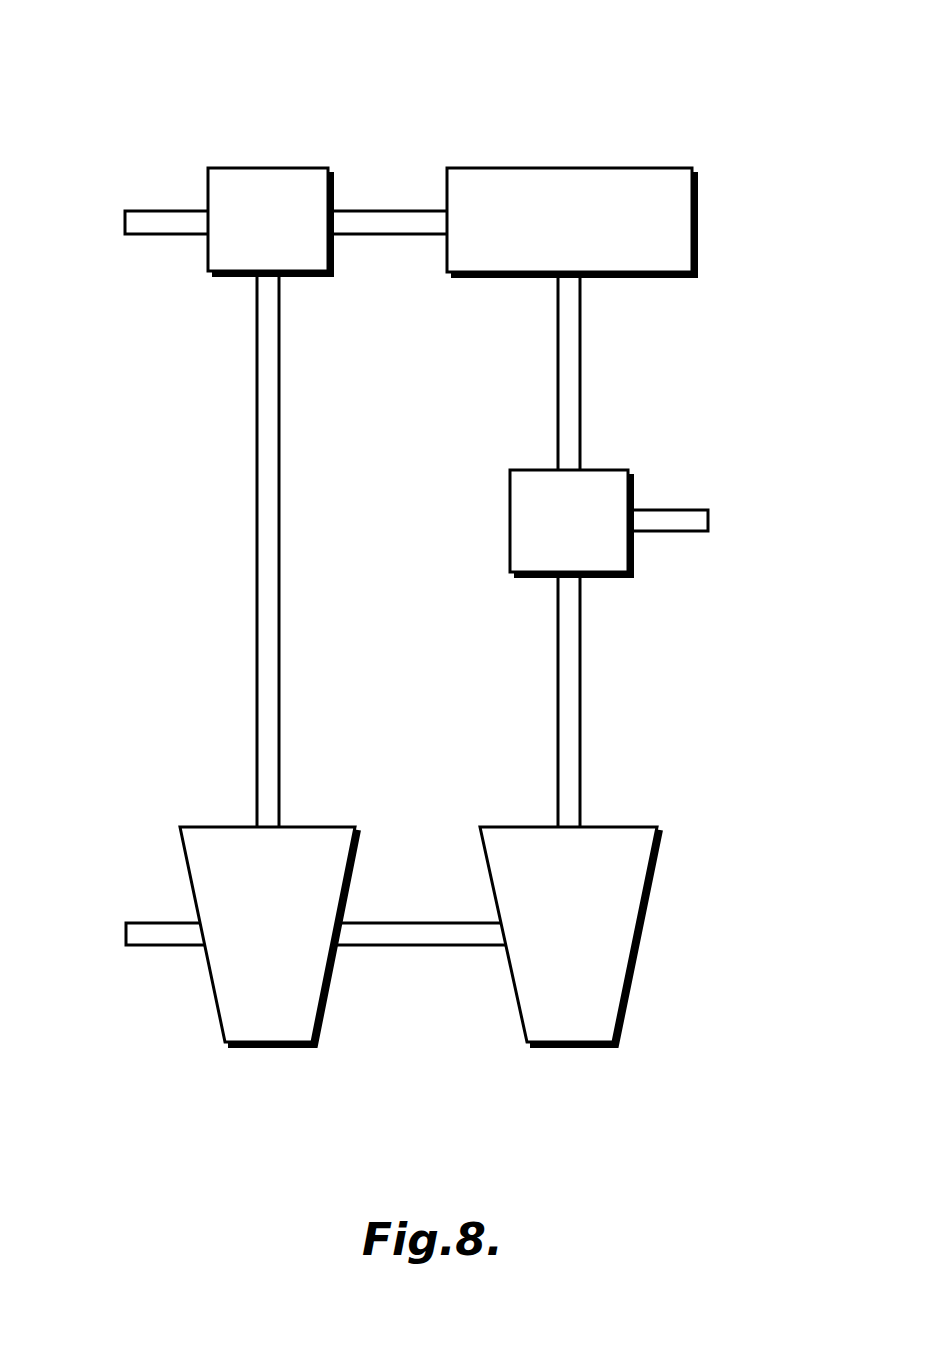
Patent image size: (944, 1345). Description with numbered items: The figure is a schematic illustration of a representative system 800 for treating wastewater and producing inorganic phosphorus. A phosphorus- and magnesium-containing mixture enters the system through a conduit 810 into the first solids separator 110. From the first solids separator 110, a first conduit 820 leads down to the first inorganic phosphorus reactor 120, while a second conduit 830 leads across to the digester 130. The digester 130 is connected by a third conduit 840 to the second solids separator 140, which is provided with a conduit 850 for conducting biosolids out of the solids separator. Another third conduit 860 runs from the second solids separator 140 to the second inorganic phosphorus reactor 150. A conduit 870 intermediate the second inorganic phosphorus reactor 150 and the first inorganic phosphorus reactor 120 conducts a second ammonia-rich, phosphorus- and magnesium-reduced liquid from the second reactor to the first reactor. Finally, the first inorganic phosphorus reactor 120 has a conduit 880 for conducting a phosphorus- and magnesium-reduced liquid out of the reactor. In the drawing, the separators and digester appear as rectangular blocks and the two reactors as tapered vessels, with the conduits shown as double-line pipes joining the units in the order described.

The system 800 is at (742, 100).
The first solids separator 110 is at (269, 221).
The first inorganic phosphorus reactor 120 is at (269, 936).
The digester 130 is at (571, 221).
The second solids separator 140 is at (570, 522).
The second inorganic phosphorus reactor 150 is at (570, 936).
The conduit 810 is at (168, 222).
The first conduit 820 is at (274, 449).
The second conduit 830 is at (391, 213).
The third conduit 840 is at (578, 363).
The conduit 850 is at (670, 518).
The third conduit 860 is at (572, 684).
The conduit 870 is at (408, 921).
The conduit 880 is at (144, 928).